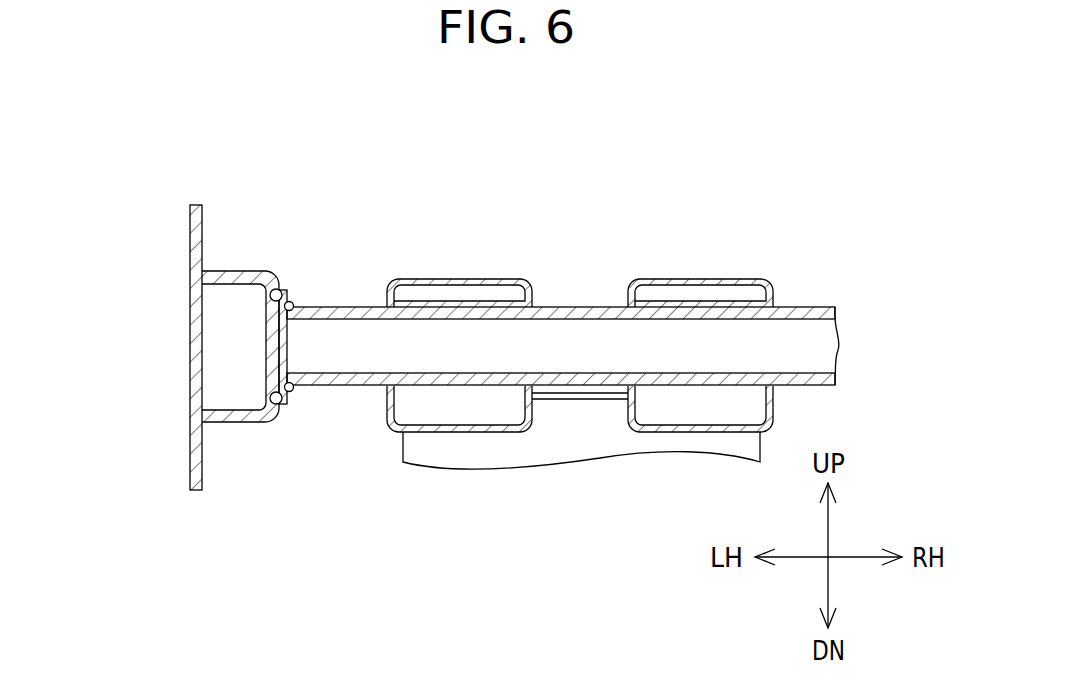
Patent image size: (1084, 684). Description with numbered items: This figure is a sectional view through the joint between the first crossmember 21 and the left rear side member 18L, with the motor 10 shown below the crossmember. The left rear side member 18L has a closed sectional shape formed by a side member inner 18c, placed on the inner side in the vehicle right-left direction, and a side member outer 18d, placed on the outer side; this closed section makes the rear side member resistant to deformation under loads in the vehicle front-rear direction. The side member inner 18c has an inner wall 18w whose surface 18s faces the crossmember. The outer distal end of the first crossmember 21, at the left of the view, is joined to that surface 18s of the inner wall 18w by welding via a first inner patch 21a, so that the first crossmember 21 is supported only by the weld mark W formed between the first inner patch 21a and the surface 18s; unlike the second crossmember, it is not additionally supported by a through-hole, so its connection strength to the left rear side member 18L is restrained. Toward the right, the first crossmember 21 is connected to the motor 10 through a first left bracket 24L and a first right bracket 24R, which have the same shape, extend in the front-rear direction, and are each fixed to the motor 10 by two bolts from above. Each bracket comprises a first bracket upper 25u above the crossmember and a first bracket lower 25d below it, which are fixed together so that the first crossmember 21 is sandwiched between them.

The left rear side member 18L is at (147, 200).
The inner wall 18w is at (262, 336).
The surface 18s is at (265, 372).
The side member outer 18d is at (190, 405).
The side member inner 18c is at (233, 423).
The first crossmember 21 is at (812, 350).
The first inner patch 21a is at (282, 300).
The weld mark W is at (272, 288).
The first left bracket 24L is at (490, 213).
The first right bracket 24R is at (732, 213).
The first bracket upper 25u is at (534, 290).
The first bracket lower 25d is at (448, 432).
The motor 10 is at (570, 452).